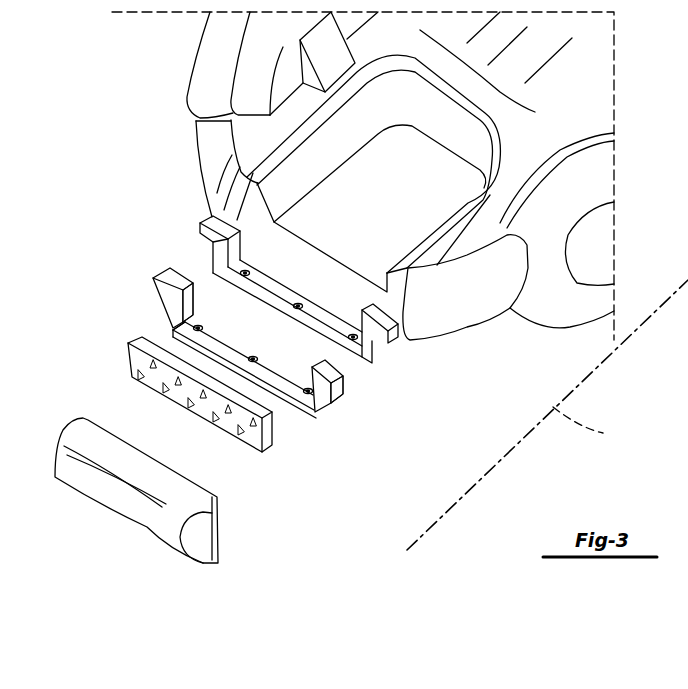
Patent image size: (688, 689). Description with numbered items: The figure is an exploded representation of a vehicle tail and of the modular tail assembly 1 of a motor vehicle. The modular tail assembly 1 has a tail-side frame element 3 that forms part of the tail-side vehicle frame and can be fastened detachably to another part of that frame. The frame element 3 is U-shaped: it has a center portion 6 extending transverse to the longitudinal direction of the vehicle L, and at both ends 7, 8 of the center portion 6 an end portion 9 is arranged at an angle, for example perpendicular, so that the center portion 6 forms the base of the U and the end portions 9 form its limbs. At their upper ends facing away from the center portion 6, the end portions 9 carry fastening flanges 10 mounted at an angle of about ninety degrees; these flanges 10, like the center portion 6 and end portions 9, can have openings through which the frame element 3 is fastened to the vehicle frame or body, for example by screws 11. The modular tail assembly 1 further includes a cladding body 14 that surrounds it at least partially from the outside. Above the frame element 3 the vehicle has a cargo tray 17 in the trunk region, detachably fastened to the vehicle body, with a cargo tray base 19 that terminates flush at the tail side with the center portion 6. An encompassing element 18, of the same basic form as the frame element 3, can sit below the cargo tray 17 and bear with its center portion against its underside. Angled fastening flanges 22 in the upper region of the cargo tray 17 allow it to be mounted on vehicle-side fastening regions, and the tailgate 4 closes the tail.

The modular tail assembly 1 is at (75, 125).
The tail-side frame element 3 is at (160, 255).
The tailgate 4 is at (160, 409).
The center portion 6 is at (235, 350).
The end of center portion 7 is at (198, 325).
The end of center portion 8 is at (312, 382).
The end portion 9 is at (186, 292).
The fastening flange 10 is at (157, 267).
The screw 11 is at (197, 315).
The cladding body 14 is at (120, 507).
The cargo tray 17 is at (283, 187).
The encompassing element 18 is at (193, 208).
The cargo tray base 19 is at (347, 241).
The fastening flange 22 is at (504, 147).
The longitudinal direction of the vehicle L is at (584, 427).